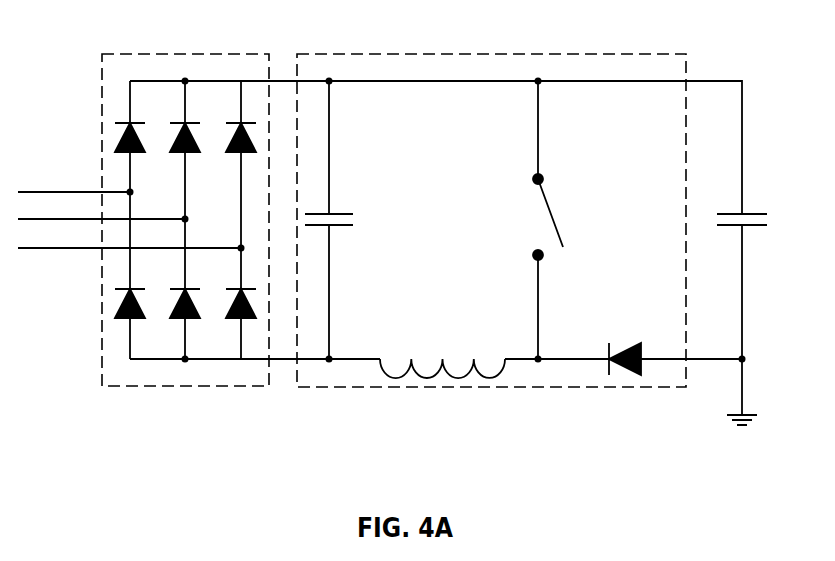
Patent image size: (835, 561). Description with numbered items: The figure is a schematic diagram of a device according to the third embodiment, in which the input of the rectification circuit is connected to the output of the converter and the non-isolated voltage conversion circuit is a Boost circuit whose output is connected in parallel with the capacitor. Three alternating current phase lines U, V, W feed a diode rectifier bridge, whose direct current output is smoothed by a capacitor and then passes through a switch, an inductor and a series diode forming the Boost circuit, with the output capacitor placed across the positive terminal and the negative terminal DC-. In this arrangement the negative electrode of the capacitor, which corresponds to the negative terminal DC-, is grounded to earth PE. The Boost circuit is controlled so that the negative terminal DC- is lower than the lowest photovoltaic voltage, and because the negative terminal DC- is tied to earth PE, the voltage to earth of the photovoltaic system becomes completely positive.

The AC input phase U is at (74, 180).
The AC input phase V is at (101, 207).
The AC input phase W is at (129, 237).
The negative terminal of the output direct current DC- is at (712, 346).
The ground PE is at (772, 393).